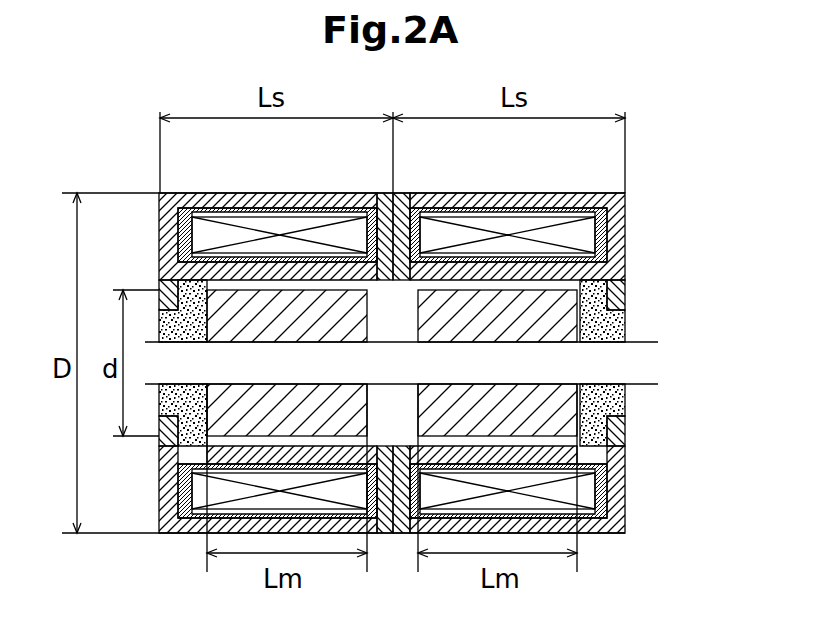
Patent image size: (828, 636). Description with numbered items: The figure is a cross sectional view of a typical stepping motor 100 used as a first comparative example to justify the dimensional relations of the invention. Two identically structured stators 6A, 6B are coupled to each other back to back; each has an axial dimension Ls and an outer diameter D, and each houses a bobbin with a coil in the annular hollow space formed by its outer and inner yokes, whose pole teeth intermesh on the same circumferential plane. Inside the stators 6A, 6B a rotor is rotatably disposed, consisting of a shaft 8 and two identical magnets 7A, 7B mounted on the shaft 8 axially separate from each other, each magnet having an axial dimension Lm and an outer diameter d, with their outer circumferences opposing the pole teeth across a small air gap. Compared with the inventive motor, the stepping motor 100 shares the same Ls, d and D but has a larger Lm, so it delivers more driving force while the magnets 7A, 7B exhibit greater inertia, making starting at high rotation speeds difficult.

The stepping motor 100 is at (656, 189).
The stator 6A is at (604, 558).
The stator 6B is at (177, 550).
The magnet 7A is at (498, 307).
The magnet 7B is at (294, 310).
The shaft 8 is at (640, 341).